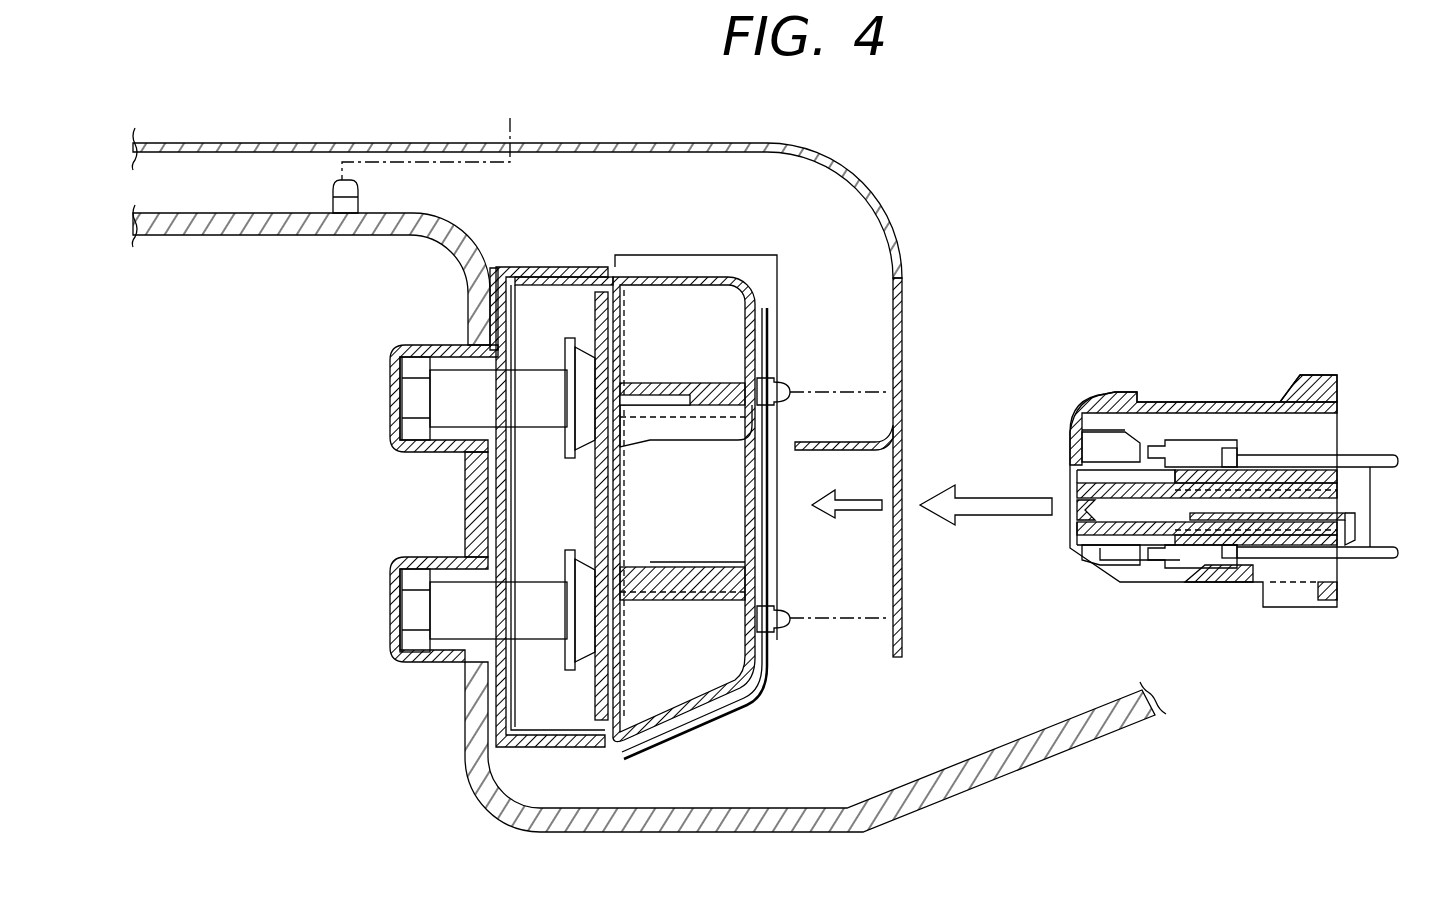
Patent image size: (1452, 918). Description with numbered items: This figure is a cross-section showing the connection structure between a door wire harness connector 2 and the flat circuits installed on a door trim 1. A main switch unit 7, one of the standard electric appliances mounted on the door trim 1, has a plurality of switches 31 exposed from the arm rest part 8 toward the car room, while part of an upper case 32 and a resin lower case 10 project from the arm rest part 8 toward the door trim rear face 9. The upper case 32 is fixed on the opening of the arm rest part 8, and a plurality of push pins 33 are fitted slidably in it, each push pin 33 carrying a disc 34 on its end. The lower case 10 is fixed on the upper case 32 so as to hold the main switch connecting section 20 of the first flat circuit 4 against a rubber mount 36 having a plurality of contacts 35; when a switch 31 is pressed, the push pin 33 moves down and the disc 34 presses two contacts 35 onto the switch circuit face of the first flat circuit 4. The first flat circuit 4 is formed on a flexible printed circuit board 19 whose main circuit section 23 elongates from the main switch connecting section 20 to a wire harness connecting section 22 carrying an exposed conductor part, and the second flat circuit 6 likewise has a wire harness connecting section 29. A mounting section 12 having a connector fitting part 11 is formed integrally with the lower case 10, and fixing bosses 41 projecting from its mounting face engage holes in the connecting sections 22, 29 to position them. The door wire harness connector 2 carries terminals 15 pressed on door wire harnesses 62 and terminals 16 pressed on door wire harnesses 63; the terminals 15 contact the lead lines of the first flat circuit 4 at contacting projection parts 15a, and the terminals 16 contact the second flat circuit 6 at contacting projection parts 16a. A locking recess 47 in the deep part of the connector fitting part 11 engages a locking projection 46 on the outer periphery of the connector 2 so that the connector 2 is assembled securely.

The door trim 1 is at (262, 236).
The door wire harness connector 2 is at (1223, 386).
The first flat circuit 4 is at (745, 700).
The second flat circuit 6 is at (280, 143).
The main switch unit 7 is at (579, 260).
The arm rest part 8 is at (440, 726).
The door trim rear face 9 is at (492, 333).
The lower case 10 is at (705, 275).
The connector fitting part 11 is at (728, 403).
The mounting section 12 is at (724, 268).
The terminal 15 is at (1160, 578).
The contacting projection part 15a is at (1135, 580).
The terminal 16 is at (1160, 432).
The contacting projection part 16a is at (1113, 427).
The flexible printed circuit board 19 is at (660, 728).
The main switch connecting section 20 is at (588, 690).
The wire harness connecting section 22 is at (766, 344).
The main circuit section 23 is at (692, 714).
The wire harness connecting section 29 is at (898, 638).
The switch 31 is at (390, 398).
The upper case 32 is at (606, 274).
The push pin 33 is at (440, 400).
The disc 34 is at (563, 440).
The contact 35 is at (583, 553).
The rubber mount 36 is at (588, 303).
The fixing boss 41 is at (787, 627).
The locking projection 46 is at (1127, 392).
The locking recess 47 is at (654, 398).
The door wire harness 62 is at (1375, 557).
The door wire harness 63 is at (1380, 460).